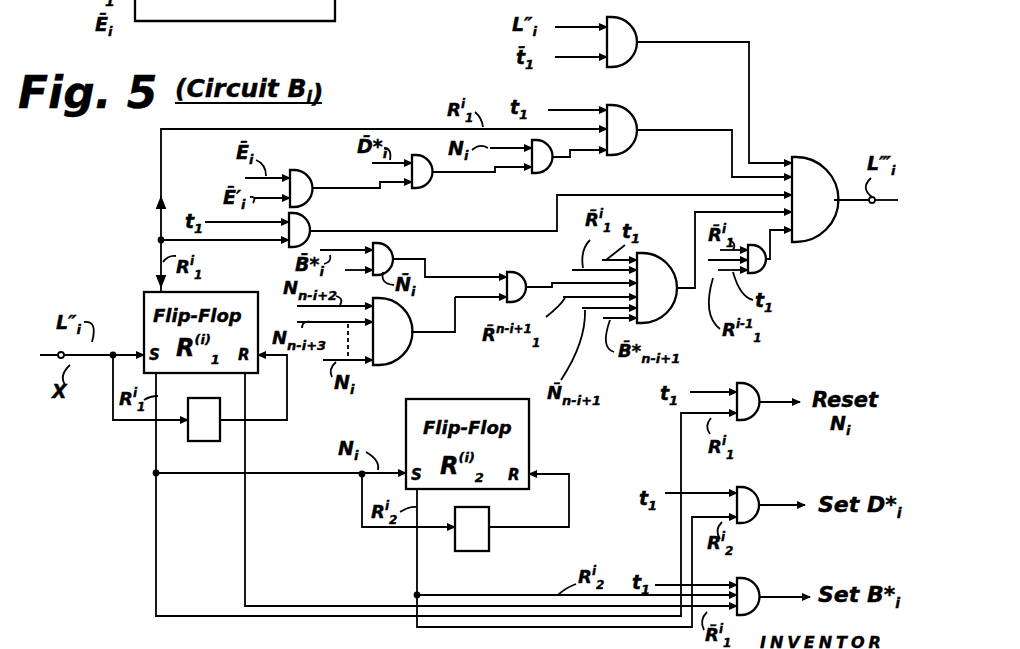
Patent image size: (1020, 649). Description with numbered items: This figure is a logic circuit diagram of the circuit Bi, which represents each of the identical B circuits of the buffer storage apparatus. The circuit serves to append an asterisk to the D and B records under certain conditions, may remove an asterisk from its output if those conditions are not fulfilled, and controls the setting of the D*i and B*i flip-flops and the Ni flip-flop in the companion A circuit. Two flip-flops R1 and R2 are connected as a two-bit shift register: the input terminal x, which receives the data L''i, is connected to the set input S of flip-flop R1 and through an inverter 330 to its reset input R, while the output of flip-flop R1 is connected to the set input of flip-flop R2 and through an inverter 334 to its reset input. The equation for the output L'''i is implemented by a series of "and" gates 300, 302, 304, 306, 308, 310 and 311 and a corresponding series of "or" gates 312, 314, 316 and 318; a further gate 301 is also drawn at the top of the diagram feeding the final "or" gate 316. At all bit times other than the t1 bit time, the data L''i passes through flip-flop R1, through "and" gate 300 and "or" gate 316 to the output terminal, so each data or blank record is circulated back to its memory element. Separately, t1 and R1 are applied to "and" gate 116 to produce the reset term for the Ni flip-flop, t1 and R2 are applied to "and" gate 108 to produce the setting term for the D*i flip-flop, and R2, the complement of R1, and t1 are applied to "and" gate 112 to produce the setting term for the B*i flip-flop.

The AND gate 301 is at (630, 30).
The "and" gate 300 is at (630, 118).
The "or" gate 312 is at (553, 158).
The "and" gate 308 is at (433, 178).
The "or" gate 318 is at (312, 188).
The "and" gate 310 is at (311, 226).
The "and" gate 306 is at (400, 257).
The "or" gate 314 is at (521, 276).
The "and" gate 311 is at (403, 349).
The "and" gate 304 is at (670, 307).
The "and" gate 302 is at (770, 266).
The "or" gate 316 is at (826, 226).
The inverter 330 is at (205, 441).
The inverter 334 is at (489, 542).
The "and" gate 116 is at (765, 388).
The "and" gate 108 is at (750, 490).
The "and" gate 112 is at (757, 610).